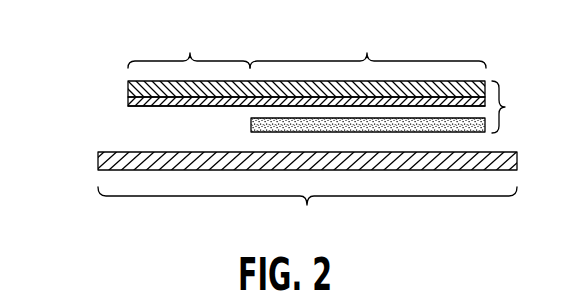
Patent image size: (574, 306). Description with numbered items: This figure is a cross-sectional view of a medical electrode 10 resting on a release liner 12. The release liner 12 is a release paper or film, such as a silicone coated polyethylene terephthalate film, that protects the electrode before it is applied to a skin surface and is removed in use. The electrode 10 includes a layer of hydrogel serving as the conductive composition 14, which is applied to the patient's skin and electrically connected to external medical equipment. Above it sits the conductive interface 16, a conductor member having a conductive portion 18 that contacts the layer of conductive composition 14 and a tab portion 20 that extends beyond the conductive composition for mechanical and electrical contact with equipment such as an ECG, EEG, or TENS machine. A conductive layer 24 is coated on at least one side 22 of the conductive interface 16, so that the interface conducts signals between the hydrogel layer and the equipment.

The medical electrode 10 is at (514, 107).
The release liner 12 is at (98, 160).
The conductive composition 14 is at (251, 123).
The conductive interface 16 is at (128, 89).
The conductive portion 18 is at (368, 44).
The tab portion 20 is at (189, 44).
The side of conductive interface 22 is at (128, 100).
The conductive layer 24 is at (180, 107).